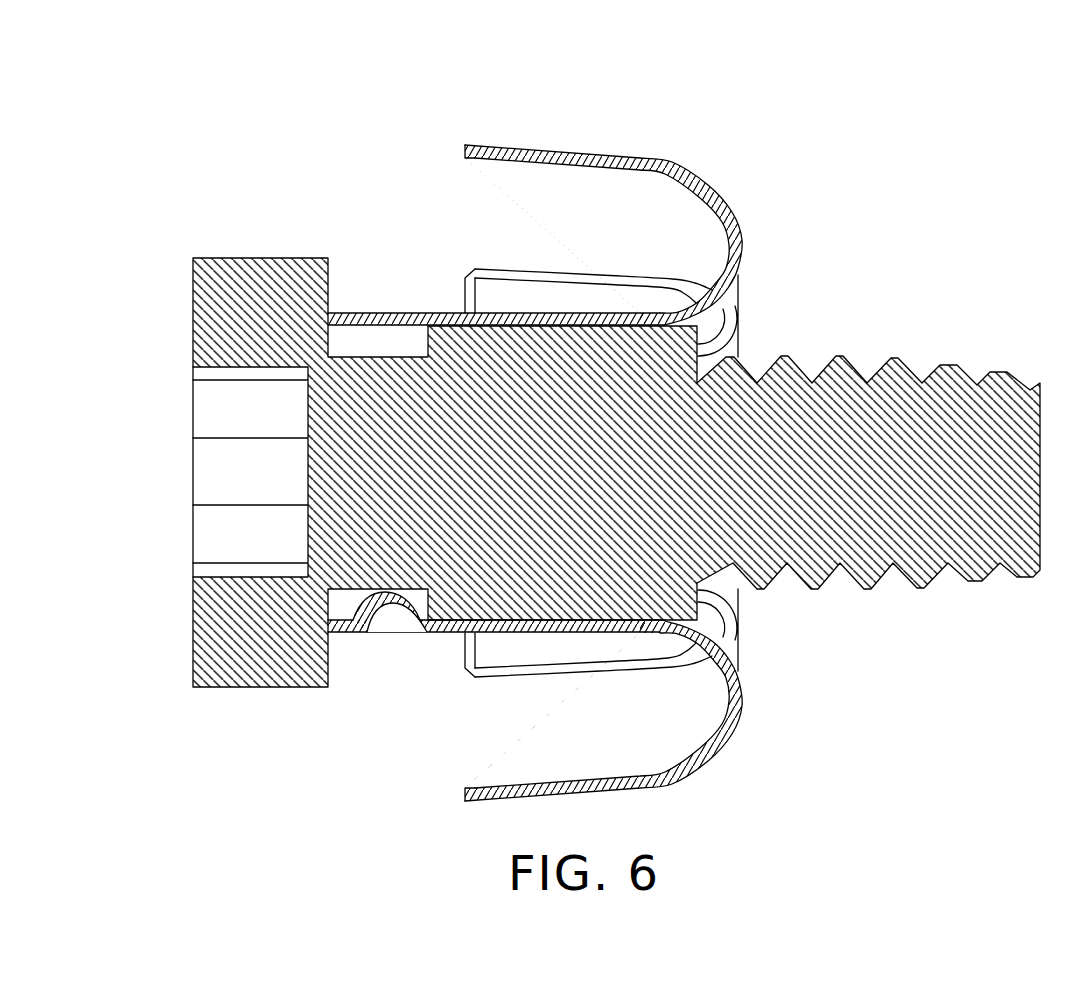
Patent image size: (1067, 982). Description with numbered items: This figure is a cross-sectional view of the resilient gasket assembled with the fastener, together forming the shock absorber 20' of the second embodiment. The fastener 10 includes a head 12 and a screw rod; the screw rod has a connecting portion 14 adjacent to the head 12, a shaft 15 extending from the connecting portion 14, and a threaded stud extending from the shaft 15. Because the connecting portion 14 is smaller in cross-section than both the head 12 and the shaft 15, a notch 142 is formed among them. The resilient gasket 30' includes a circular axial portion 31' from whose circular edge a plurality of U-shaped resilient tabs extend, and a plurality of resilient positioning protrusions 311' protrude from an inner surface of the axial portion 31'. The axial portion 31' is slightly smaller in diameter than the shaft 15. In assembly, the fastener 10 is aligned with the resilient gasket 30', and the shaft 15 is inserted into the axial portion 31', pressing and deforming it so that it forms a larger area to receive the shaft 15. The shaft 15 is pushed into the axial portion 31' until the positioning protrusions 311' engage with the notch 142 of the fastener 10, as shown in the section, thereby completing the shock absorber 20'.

The fastener 10 is at (599, 481).
The head 12 is at (237, 657).
The connecting portion 14 is at (355, 378).
The notch 142 is at (392, 340).
The shaft 15 is at (562, 590).
The shock absorber 20' is at (505, 423).
The resilient gasket 30' is at (656, 247).
The axial portion 31' is at (496, 263).
The positioning protrusions 311' is at (390, 657).